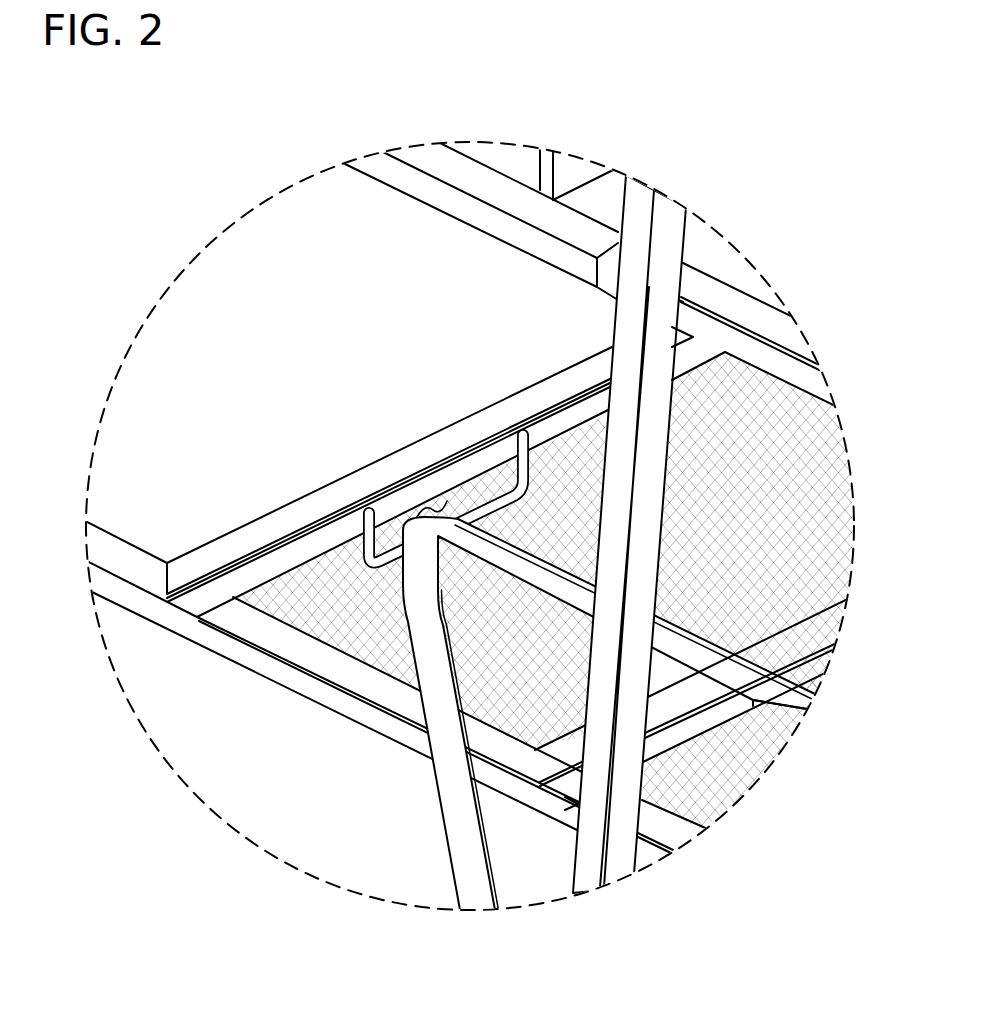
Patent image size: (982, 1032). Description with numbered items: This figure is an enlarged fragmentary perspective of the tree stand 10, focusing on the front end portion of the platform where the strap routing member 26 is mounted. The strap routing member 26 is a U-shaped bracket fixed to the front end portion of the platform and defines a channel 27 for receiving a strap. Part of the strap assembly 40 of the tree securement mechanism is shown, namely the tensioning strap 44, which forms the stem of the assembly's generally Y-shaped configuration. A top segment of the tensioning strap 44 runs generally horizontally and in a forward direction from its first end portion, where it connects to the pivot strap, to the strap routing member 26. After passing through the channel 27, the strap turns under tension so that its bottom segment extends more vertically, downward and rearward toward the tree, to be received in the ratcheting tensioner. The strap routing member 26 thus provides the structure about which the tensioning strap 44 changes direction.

The shelving system 10 is at (190, 855).
The strap routing member 26 is at (363, 548).
The channel 27 is at (447, 500).
The strap assembly 40 is at (574, 713).
The tensioning strap 44 is at (467, 863).